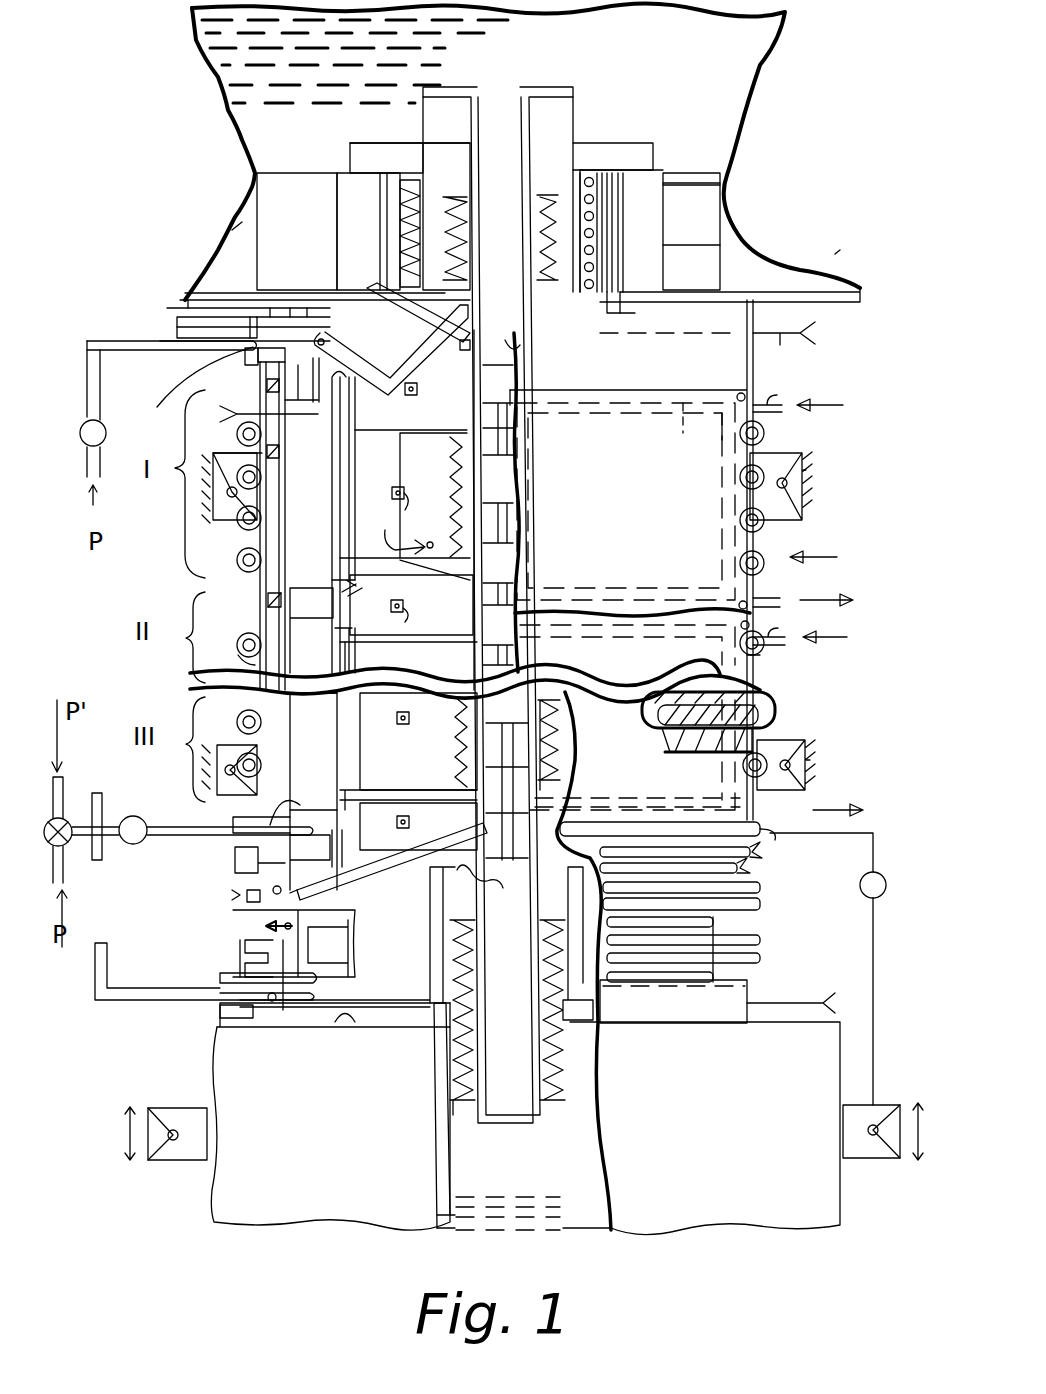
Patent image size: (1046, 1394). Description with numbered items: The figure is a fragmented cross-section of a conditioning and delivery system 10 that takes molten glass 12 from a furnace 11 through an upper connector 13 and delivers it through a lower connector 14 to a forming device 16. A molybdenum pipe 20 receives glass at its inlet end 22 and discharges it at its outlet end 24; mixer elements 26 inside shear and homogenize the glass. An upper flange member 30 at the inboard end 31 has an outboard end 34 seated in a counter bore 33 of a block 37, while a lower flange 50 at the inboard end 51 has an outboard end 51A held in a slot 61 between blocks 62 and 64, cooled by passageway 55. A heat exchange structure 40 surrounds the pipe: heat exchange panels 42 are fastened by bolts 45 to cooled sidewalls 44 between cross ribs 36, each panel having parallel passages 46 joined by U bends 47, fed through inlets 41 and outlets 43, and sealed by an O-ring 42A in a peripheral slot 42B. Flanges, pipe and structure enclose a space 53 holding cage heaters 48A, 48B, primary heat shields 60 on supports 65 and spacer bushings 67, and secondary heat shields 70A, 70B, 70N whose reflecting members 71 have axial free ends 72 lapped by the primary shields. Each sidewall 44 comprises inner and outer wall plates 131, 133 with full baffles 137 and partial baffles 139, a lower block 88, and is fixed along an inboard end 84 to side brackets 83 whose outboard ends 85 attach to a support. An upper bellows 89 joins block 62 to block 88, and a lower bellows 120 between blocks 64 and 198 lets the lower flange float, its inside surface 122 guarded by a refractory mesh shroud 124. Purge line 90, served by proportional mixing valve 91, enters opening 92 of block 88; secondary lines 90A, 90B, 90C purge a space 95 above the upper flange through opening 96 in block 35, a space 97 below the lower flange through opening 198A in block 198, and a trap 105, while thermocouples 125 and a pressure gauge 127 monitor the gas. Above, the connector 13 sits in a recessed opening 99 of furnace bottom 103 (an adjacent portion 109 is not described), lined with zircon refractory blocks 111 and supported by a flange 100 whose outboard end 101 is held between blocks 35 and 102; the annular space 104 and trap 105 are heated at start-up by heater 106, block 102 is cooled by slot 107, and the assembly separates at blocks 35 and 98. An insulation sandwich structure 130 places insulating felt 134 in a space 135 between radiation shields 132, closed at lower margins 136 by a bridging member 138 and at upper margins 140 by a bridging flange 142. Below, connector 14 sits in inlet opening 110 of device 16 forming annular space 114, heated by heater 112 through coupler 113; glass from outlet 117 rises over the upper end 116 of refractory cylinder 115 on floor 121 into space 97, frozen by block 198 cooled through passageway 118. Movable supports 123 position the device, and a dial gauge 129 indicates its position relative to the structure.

The conditioning and delivery system 10 is at (835, 254).
The furnace 11 is at (664, 92).
The glass 12 is at (357, 90).
The upper connector 13 is at (520, 213).
The lower connector 14 is at (520, 1082).
The forming device 16 is at (284, 1157).
The pipe 20 is at (480, 380).
The inlet end 22 is at (525, 345).
The lower outlet end 24 is at (560, 800).
The mixer elements 26 is at (512, 508).
The upper flange member 30 is at (457, 397).
The inboard end 31 is at (488, 330).
The counter bore 33 is at (448, 445).
The outboard end 34 is at (267, 386).
The block 35 is at (268, 306).
The cross ribs 36 is at (318, 425).
The block 37 is at (258, 352).
The heat exchange structure 40 is at (875, 564).
The inlets 41 is at (777, 395).
The heat exchange panels 42 is at (706, 577).
The O-ring 42A is at (689, 436).
The peripheral slot 42B is at (660, 403).
The outlets 43 is at (780, 602).
The cooled sidewalls 44 is at (248, 545).
The bolts 45 is at (739, 394).
The fluid conducting passages 46 is at (655, 727).
The U bends 47 is at (770, 655).
The cage heater 48A is at (455, 742).
The cage heater 48B is at (565, 760).
The lower flange 50 is at (416, 894).
The inboard end 51 is at (462, 830).
The outboard end 51A is at (296, 882).
The closed chamber 53 is at (325, 740).
The passageway 55 is at (245, 900).
The primary heat shields 60 is at (399, 529).
The slot 61 is at (245, 957).
The block 62 is at (230, 895).
The block 64 is at (268, 895).
The support members 65 is at (405, 491).
The spacer bushings 67 is at (406, 508).
The secondary heat shield 70A is at (487, 425).
The secondary heat shield 70B is at (395, 800).
The secondary heat shield 70N is at (395, 642).
The heat reflecting members 71 is at (355, 600).
The axial free ends 72 is at (350, 435).
The side brackets 83 is at (228, 458).
The inboard end 84 is at (786, 515).
The outboard ends 85 is at (806, 477).
The lower block 88 is at (232, 840).
The upper bellows 89 is at (233, 857).
The purge line 90 is at (147, 836).
The secondary purge line 90A is at (120, 352).
The secondary purge line 90B is at (110, 1005).
The purge line 90C is at (178, 308).
The proportional mixing valve 91 is at (75, 845).
The opening 92 is at (282, 825).
The space 95 is at (350, 352).
The opening 96 is at (196, 390).
The space 97 is at (377, 898).
The block 98 is at (292, 306).
The recessed opening 99 is at (663, 185).
The flange 100 is at (378, 254).
The outboard end 101 is at (306, 306).
The block 102 is at (262, 308).
The furnace bottom 103 is at (212, 296).
The annular space 104 is at (545, 165).
The trap 105 is at (395, 292).
The heater 106 is at (457, 195).
The fluid carrying slot 107 is at (177, 323).
The wall 109 is at (240, 212).
The inlet opening 110 is at (450, 1080).
The refractory blocks 111 is at (338, 183).
The heater 112 is at (547, 1105).
The coupler 113 is at (640, 990).
The annular space 114 is at (466, 1108).
The refractory cylinder 115 is at (428, 990).
The upper end 116 is at (487, 878).
The outlet 117 is at (508, 1130).
The passageway 118 is at (220, 1012).
The lower bellows 120 is at (287, 1005).
The floor 121 is at (347, 1022).
The inside surface 122 is at (302, 922).
The movable supports 123 is at (190, 1160).
The refractory mesh shroud 124 is at (357, 966).
The thermocouples 125 is at (480, 560).
The pressure gauge 127 is at (86, 443).
The dial gauge 129 is at (886, 893).
The insulation sandwich structure 130 is at (365, 143).
The inner wall plate 131 is at (262, 635).
The radiation shields 132 is at (595, 245).
The outer wall plate 133 is at (245, 662).
The insulating felt 134 is at (598, 205).
The space 135 is at (400, 208).
The lower margins 136 is at (600, 283).
The full baffles 137 is at (266, 603).
The annular bridging member 138 is at (620, 308).
The partial intermediate baffles 139 is at (290, 465).
The upper margins 140 is at (575, 175).
The bridging flange 142 is at (350, 153).
The block 198 is at (217, 980).
The opening 198A is at (268, 1003).